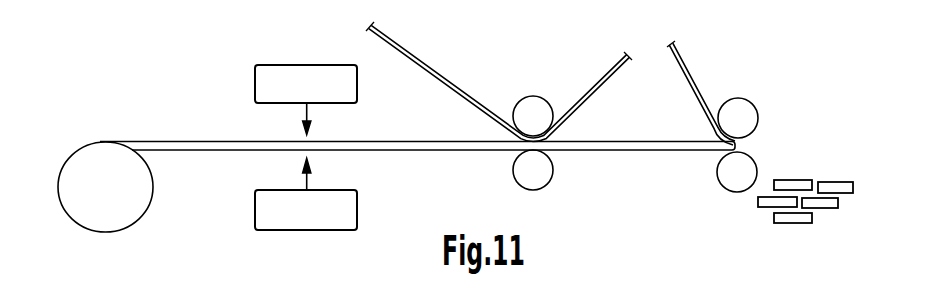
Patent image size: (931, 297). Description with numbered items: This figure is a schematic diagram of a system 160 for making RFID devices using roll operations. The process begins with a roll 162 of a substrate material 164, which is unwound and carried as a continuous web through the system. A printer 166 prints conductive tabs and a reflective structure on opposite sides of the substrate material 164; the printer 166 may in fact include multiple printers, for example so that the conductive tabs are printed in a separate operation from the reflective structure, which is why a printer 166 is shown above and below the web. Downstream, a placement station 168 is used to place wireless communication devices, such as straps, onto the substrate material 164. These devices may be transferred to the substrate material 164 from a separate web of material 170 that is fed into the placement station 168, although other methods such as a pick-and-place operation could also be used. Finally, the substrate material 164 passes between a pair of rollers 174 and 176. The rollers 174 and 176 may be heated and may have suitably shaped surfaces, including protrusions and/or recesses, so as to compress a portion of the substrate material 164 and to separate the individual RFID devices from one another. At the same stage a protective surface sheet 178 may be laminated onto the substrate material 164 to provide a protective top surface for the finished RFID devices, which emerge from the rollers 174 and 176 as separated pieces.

The system 160 is at (147, 55).
The roll 162 is at (113, 208).
The substrate material 164 is at (162, 141).
The printer 166 is at (255, 80).
The placement station 168 is at (509, 60).
The web of material 170 is at (424, 69).
The roller 174 is at (744, 112).
The roller 176 is at (730, 175).
The protective surface sheet 178 is at (687, 68).